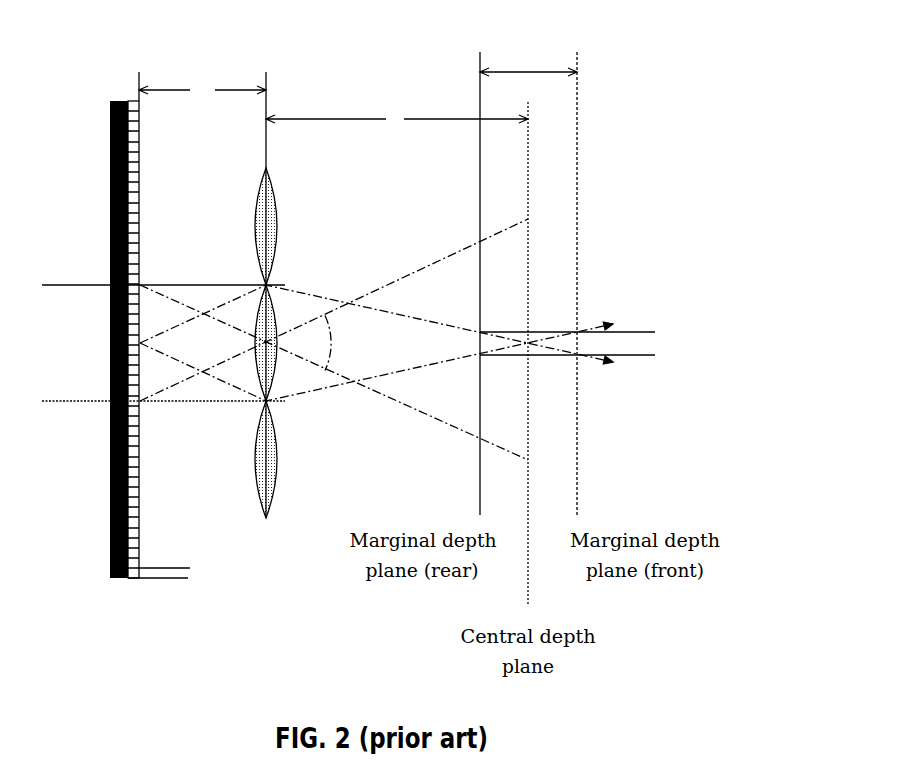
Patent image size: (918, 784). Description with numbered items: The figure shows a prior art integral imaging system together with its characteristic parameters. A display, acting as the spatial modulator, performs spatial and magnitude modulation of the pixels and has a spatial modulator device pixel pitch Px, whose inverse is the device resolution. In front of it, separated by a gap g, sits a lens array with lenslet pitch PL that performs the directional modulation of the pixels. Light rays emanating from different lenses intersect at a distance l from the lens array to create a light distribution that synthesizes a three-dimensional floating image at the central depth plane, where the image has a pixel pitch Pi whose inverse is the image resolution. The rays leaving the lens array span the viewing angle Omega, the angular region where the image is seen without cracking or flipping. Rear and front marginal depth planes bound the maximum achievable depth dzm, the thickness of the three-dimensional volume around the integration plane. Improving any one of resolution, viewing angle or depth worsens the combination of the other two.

The lenslet pitch PL is at (70, 285).
The gap between display and lens array g is at (202, 90).
The distance from lens array to central depth plane l is at (397, 119).
The maximum achievable depth dzm is at (528, 58).
The viewing angle Omega is at (343, 343).
The pixel pitch of the image Pi is at (635, 295).
The spatial modulator device pixel pitch Px is at (168, 528).